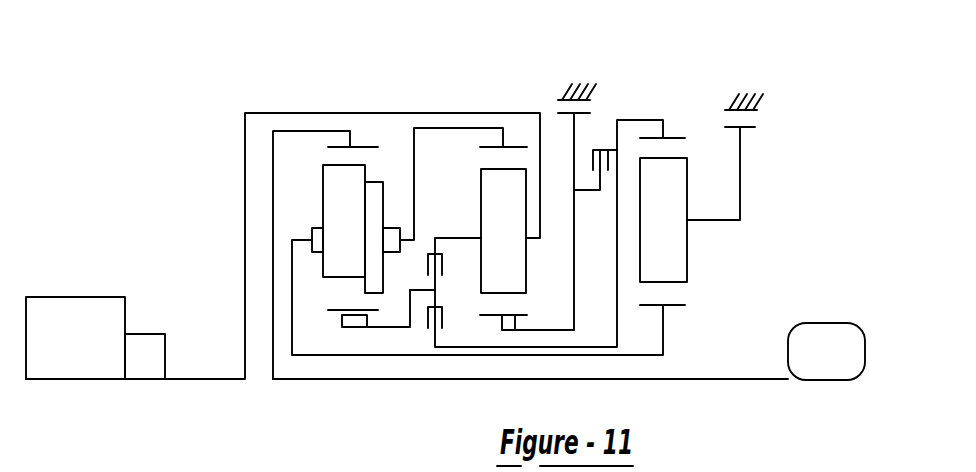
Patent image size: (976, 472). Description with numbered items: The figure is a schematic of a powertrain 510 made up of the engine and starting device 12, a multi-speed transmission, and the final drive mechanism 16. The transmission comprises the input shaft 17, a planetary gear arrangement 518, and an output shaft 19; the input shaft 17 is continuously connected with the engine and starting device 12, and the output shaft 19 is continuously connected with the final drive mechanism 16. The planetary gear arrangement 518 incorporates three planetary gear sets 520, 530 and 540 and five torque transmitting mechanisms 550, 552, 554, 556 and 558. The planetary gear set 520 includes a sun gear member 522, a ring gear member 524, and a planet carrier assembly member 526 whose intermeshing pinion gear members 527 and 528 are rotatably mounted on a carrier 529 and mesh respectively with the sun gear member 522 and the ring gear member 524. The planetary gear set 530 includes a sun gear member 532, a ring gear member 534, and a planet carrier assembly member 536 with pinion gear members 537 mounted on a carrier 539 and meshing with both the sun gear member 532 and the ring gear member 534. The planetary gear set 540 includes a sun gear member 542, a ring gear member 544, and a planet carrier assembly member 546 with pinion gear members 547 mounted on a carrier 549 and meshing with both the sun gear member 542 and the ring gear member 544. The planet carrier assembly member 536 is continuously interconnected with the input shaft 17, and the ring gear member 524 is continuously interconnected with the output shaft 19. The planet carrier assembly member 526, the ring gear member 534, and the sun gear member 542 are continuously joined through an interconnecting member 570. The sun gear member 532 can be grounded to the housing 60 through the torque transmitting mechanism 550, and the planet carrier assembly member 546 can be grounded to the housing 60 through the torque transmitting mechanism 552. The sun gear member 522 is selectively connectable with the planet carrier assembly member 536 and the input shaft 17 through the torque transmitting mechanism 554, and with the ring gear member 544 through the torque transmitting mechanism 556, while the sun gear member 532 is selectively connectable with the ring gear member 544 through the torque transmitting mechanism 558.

The powertrain 510 is at (138, 168).
The engine and starting device 12 is at (66, 290).
The input shaft 17 is at (217, 379).
The output shaft 19 is at (765, 379).
The final drive mechanism 16 is at (815, 318).
The planetary gear arrangement 518 is at (415, 392).
The planetary gear set 520 is at (330, 322).
The sun gear member 522 is at (375, 313).
The ring gear member 524 is at (370, 145).
The planet carrier assembly member 526 is at (300, 200).
The pinion gear member 527 is at (343, 280).
The pinion gear member 528 is at (333, 188).
The carrier 529 is at (303, 233).
The planetary gear set 530 is at (527, 124).
The sun gear member 532 is at (508, 332).
The ring gear member 534 is at (508, 143).
The planet carrier assembly member 536 is at (540, 253).
The pinion gear member 537 is at (484, 197).
The carrier 539 is at (527, 238).
The planetary gear set 540 is at (712, 255).
The sun gear member 542 is at (673, 307).
The ring gear member 544 is at (672, 137).
The planet carrier assembly member 546 is at (710, 185).
The pinion gear member 547 is at (680, 170).
The carrier 549 is at (713, 220).
The torque transmitting mechanism 550 is at (601, 83).
The torque transmitting mechanism 552 is at (766, 102).
The torque transmitting mechanism 554 is at (450, 255).
The torque transmitting mechanism 556 is at (452, 335).
The torque transmitting mechanism 558 is at (618, 142).
The interconnecting member 570 is at (647, 357).
The housing 60 is at (563, 83).